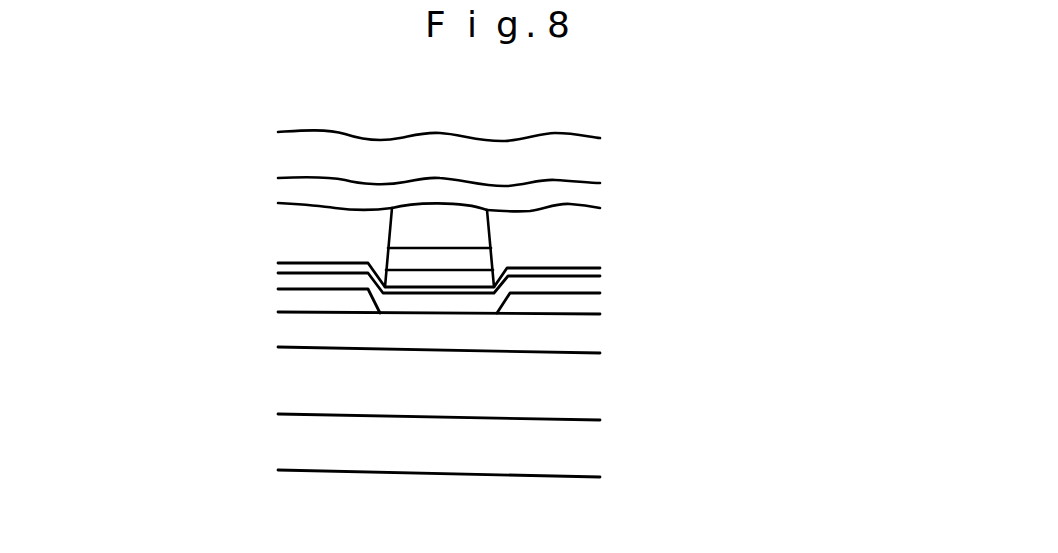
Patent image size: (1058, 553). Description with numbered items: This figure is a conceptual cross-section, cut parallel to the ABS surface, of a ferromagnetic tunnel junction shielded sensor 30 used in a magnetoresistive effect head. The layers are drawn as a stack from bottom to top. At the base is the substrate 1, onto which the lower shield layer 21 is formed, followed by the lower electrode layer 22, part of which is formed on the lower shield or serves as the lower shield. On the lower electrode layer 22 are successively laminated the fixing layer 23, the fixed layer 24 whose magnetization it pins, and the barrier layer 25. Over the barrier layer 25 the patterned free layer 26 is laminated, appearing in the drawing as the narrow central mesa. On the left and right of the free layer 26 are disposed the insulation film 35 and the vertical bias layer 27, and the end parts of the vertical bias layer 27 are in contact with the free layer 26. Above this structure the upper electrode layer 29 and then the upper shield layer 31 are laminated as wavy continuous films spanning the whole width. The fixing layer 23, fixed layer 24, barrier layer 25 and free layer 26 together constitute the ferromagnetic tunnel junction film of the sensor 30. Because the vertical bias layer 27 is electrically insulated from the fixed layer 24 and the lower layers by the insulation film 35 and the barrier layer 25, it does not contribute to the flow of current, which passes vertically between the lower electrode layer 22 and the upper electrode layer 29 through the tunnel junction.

The ferromagnetic tunnel junction shielded sensor 30 is at (157, 121).
The upper shield layer 31 is at (547, 158).
The upper electrode layer 29 is at (478, 223).
The insulation film 35 is at (323, 237).
The fixing layer 23 is at (480, 257).
The fixed layer 24 is at (480, 280).
The barrier layer 25 is at (588, 270).
The free layer 26 is at (588, 285).
The vertical bias layer 27 is at (588, 308).
The lower electrode layer 22 is at (588, 335).
The lower shield layer 21 is at (587, 387).
The substrate 1 is at (587, 453).